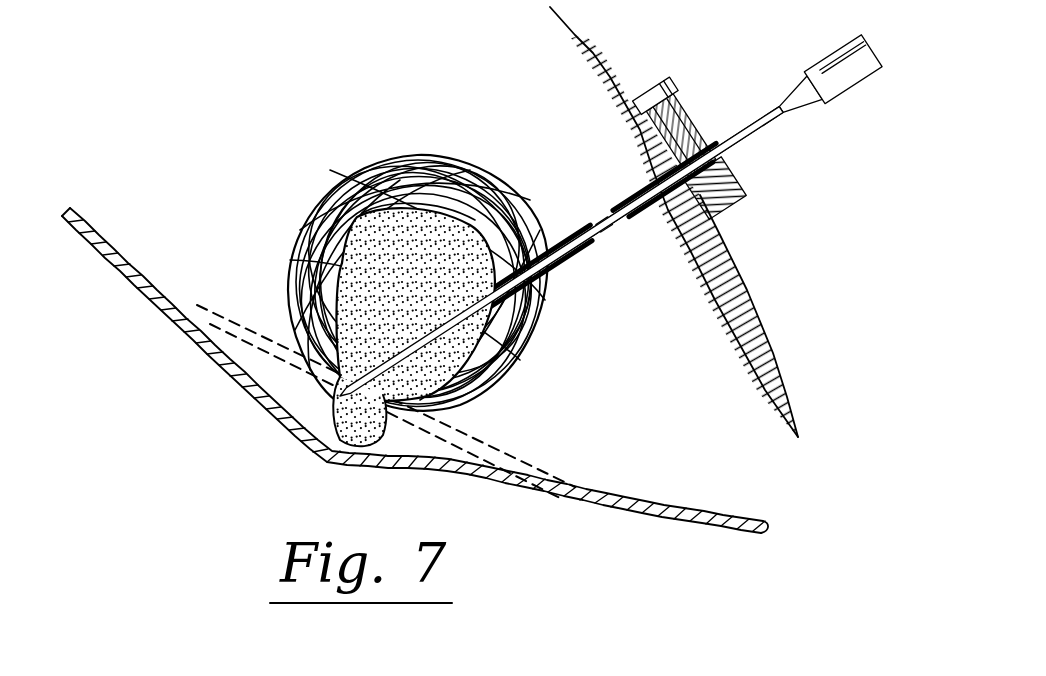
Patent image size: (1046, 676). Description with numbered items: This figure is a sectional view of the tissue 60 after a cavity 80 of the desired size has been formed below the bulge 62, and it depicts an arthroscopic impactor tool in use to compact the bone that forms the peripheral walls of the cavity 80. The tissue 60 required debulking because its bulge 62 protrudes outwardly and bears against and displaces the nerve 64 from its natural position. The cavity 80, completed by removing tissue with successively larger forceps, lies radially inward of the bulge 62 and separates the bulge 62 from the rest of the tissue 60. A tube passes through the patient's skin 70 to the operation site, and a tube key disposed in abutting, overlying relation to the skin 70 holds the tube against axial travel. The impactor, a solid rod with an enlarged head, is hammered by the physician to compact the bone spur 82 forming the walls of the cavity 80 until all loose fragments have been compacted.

The tissue 60 is at (374, 156).
The bulge 62 is at (316, 423).
The nerve 64 is at (236, 381).
The skin 70 is at (758, 304).
The cavity 80 is at (387, 393).
The bone spur 82 is at (297, 323).